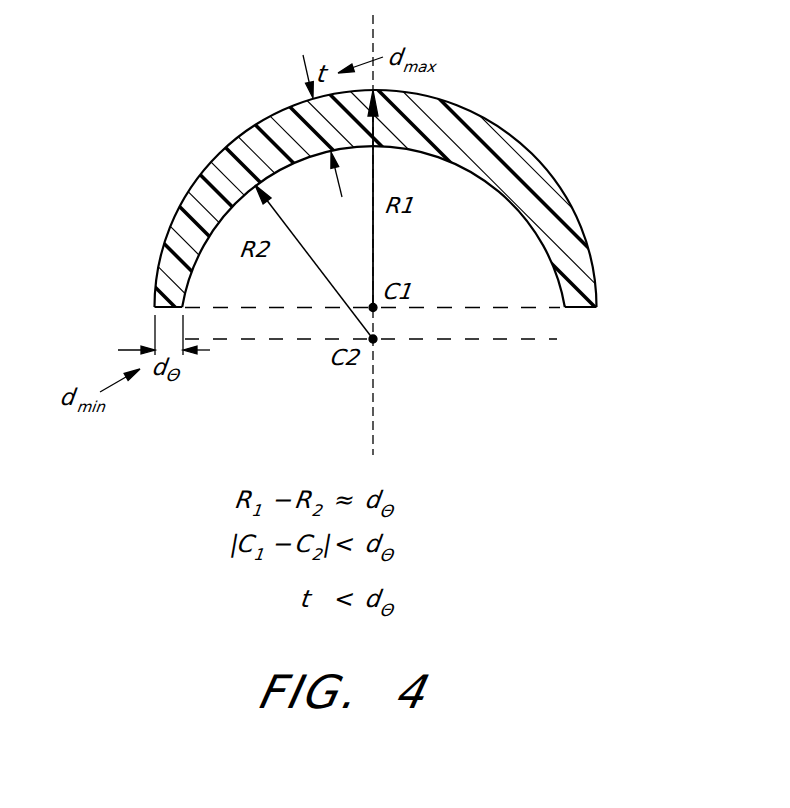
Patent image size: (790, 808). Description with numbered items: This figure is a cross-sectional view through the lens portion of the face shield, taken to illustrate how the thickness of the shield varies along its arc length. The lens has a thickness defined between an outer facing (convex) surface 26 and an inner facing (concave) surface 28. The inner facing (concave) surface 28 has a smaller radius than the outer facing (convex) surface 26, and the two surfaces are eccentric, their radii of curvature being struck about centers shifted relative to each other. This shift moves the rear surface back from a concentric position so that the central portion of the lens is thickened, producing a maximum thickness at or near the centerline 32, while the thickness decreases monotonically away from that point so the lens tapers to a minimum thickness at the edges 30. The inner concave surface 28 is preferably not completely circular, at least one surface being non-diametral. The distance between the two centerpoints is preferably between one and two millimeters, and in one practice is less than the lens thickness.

The outer facing (convex) surface 26 is at (205, 131).
The inner facing (concave) surface 28 is at (512, 242).
The edges 30 is at (597, 277).
The centerline 32 is at (375, 409).